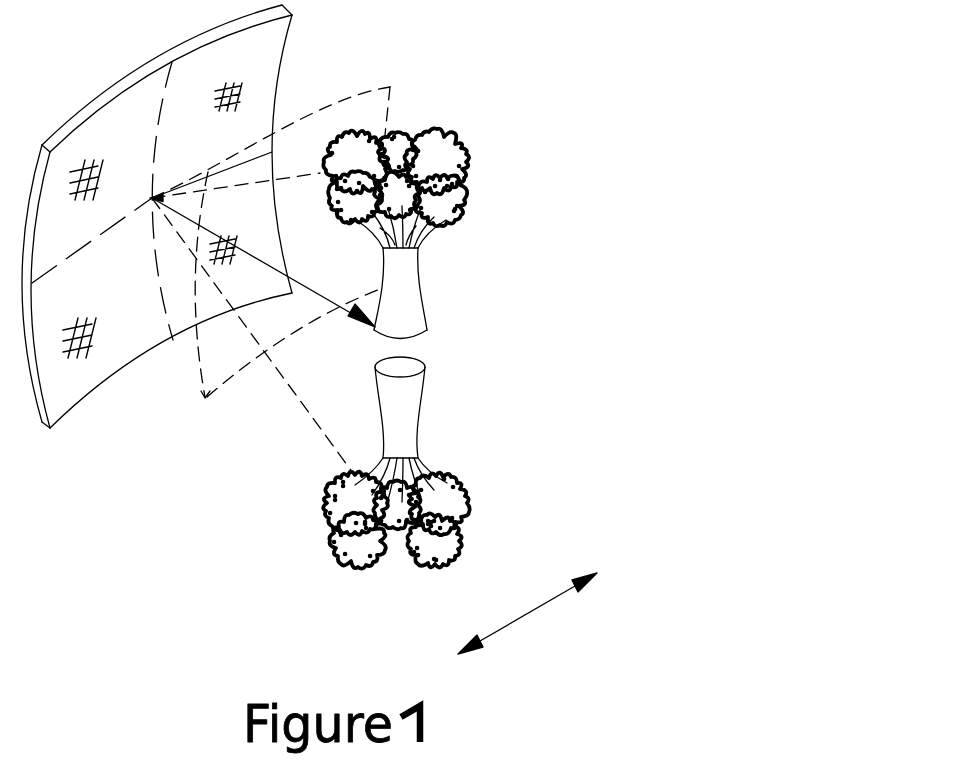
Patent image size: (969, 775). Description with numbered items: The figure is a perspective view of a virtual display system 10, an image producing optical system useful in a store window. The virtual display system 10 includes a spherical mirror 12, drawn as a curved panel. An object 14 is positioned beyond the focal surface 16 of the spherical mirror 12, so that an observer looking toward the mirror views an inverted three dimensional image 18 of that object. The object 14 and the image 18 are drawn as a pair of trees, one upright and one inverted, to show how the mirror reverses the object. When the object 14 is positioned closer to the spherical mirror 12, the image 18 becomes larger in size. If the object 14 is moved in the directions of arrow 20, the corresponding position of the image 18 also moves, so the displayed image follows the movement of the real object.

The virtual display system 10 is at (608, 88).
The spherical mirror 12 is at (78, 407).
The object 14 is at (418, 438).
The focal surface 16 is at (390, 87).
The inverted three dimensional image 18 is at (420, 293).
The arrow 20 is at (540, 607).